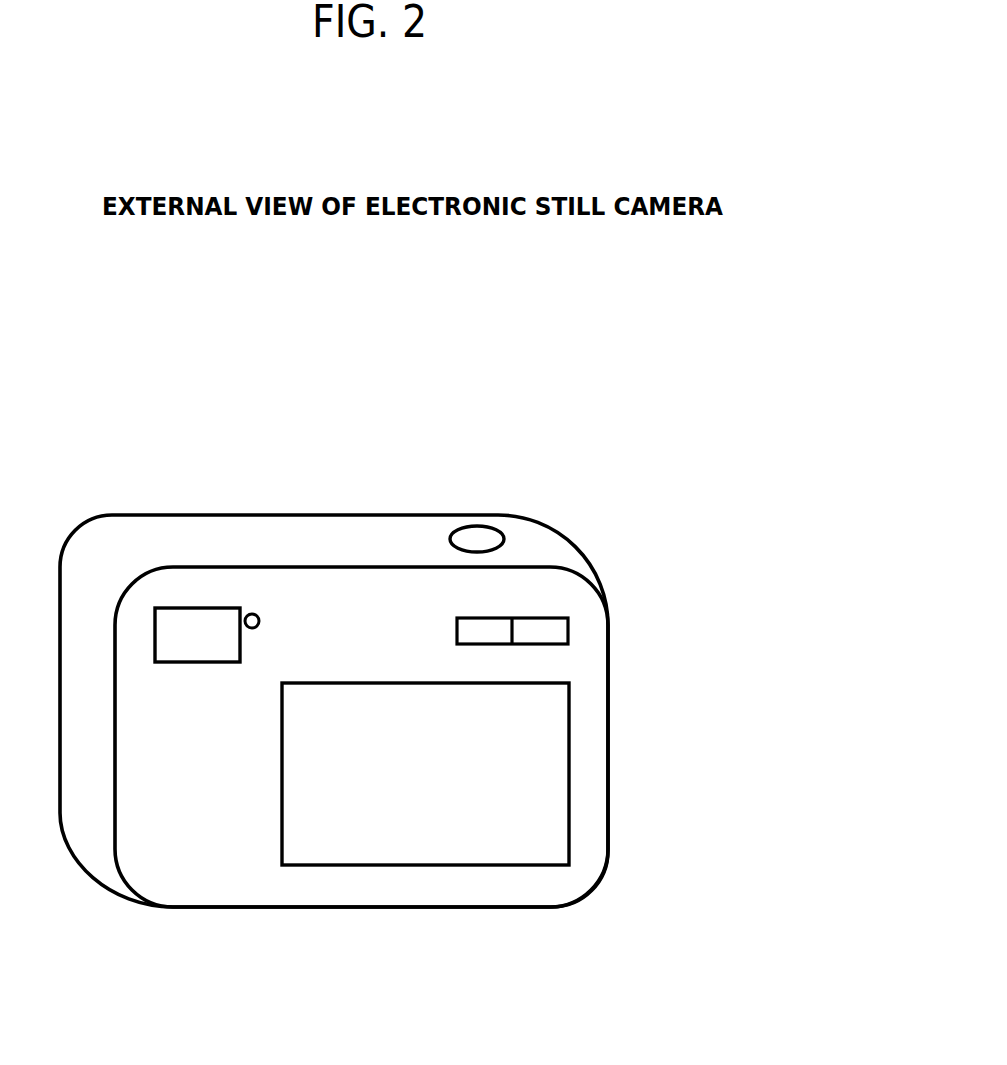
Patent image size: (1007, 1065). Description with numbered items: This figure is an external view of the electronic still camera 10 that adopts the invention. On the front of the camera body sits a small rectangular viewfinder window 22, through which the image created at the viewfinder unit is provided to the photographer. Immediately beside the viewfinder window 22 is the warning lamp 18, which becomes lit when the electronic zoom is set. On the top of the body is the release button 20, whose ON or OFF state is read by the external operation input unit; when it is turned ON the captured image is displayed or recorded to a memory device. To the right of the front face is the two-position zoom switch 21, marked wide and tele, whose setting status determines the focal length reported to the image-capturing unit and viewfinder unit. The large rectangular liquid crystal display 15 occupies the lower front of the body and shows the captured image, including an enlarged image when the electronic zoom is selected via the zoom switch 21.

The electronic still camera 10 is at (121, 493).
The viewfinder window 22 is at (197, 608).
The warning lamp 18 is at (255, 613).
The release button 20 is at (483, 541).
The zoom switch 21 is at (553, 634).
The liquid crystal display 15 is at (556, 785).